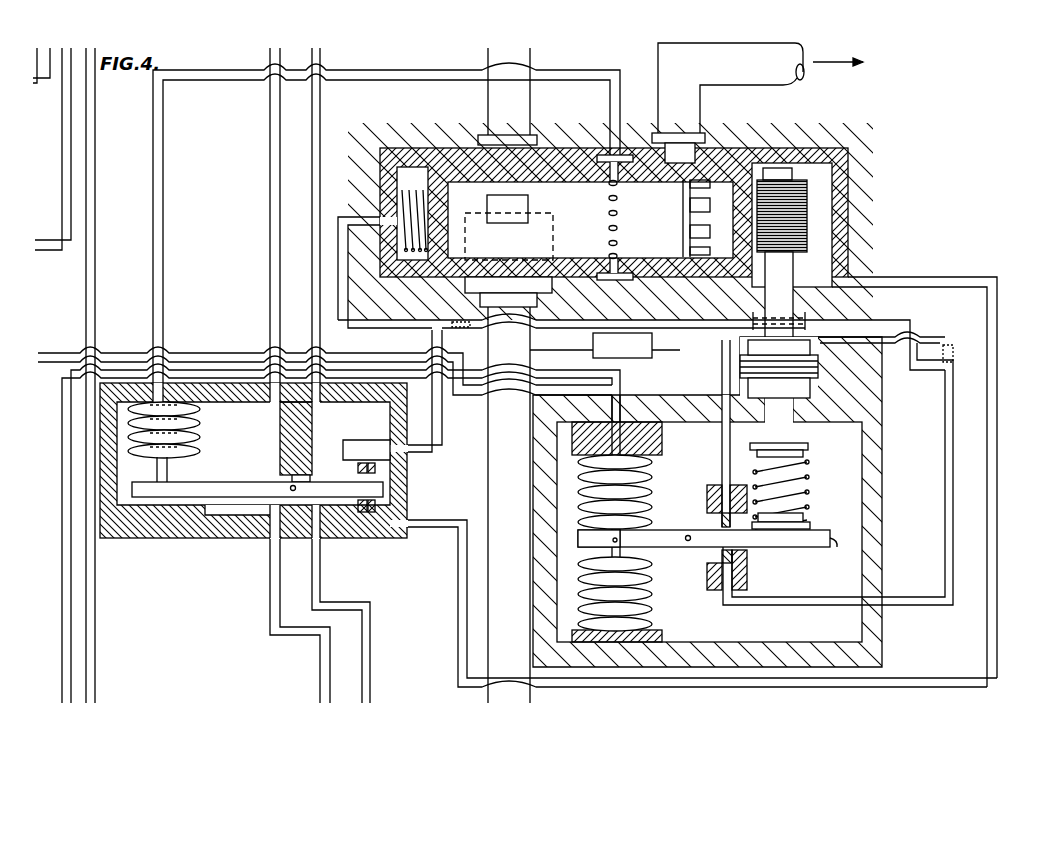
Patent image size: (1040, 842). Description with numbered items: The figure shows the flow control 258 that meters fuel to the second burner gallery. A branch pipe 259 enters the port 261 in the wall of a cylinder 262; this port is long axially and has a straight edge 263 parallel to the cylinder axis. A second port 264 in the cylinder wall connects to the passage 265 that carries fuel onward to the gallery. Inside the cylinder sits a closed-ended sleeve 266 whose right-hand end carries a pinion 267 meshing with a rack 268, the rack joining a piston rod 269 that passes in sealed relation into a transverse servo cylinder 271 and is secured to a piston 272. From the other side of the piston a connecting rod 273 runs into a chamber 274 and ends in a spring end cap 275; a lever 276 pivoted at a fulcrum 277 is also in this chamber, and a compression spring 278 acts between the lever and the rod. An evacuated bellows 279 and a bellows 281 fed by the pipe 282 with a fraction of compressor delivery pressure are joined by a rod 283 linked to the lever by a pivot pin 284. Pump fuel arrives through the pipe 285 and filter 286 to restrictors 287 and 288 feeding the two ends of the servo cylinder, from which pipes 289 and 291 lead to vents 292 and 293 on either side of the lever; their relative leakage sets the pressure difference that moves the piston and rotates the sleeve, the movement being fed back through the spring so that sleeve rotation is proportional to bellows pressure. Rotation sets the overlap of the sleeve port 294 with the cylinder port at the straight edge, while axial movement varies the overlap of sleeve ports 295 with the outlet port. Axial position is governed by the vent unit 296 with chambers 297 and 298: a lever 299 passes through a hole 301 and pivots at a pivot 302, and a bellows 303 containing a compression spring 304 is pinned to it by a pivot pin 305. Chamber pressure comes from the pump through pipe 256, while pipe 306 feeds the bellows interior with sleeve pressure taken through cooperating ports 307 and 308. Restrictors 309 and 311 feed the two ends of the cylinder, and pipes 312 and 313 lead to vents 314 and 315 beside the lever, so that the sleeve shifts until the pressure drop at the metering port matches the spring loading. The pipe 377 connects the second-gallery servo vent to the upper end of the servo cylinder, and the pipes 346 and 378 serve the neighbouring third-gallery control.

The pipe 256 is at (268, 100).
The flow control 258 is at (880, 233).
The branch pipe 259 is at (487, 97).
The port 261 is at (522, 287).
The cylinder 262 is at (822, 162).
The straight edge 263 is at (505, 222).
The port 264 is at (678, 153).
The passage 265 is at (804, 80).
The sleeve 266 is at (738, 150).
The pinion 267 is at (800, 210).
The rack 268 is at (782, 268).
The piston rod 269 is at (782, 305).
The servo cylinder 271 is at (812, 395).
The piston 272 is at (815, 367).
The connecting rod 273 is at (782, 433).
The chamber 274 is at (852, 527).
The spring end cap 275 is at (808, 452).
The lever 276 is at (830, 557).
The fulcrum 277 is at (688, 542).
The compression spring 278 is at (810, 497).
The bellows 279 is at (650, 595).
The bellows 281 is at (648, 490).
The pipe 282 is at (617, 373).
The rod 283 is at (613, 552).
The pivot pin 284 is at (613, 538).
The pipe 285 is at (553, 342).
The filter 286 is at (605, 345).
The restrictor 287 is at (958, 334).
The restrictor 288 is at (943, 392).
The pipe 289 is at (722, 443).
The pipe 291 is at (793, 605).
The vent 292 is at (718, 522).
The vent 293 is at (735, 553).
The port 294 is at (503, 205).
The ports 295 is at (690, 256).
The vent unit 296 is at (254, 497).
The chamber 297 is at (253, 458).
The chamber 298 is at (355, 411).
The lever 299 is at (197, 490).
The hole 301 is at (312, 478).
The pivot 302 is at (293, 490).
The bellows 303 is at (200, 412).
The compression spring 304 is at (203, 437).
The pivot pin 305 is at (163, 482).
The pipe 306 is at (162, 297).
The port 307 is at (697, 170).
The port 308 is at (603, 163).
The restrictor 309 is at (430, 323).
The restrictor 311 is at (965, 348).
The pipe 312 is at (444, 416).
The pipe 313 is at (458, 553).
The vent 314 is at (372, 512).
The vent 315 is at (360, 473).
The pipe 346 is at (88, 122).
The pipe 377 is at (127, 352).
The pipe 378 is at (67, 172).